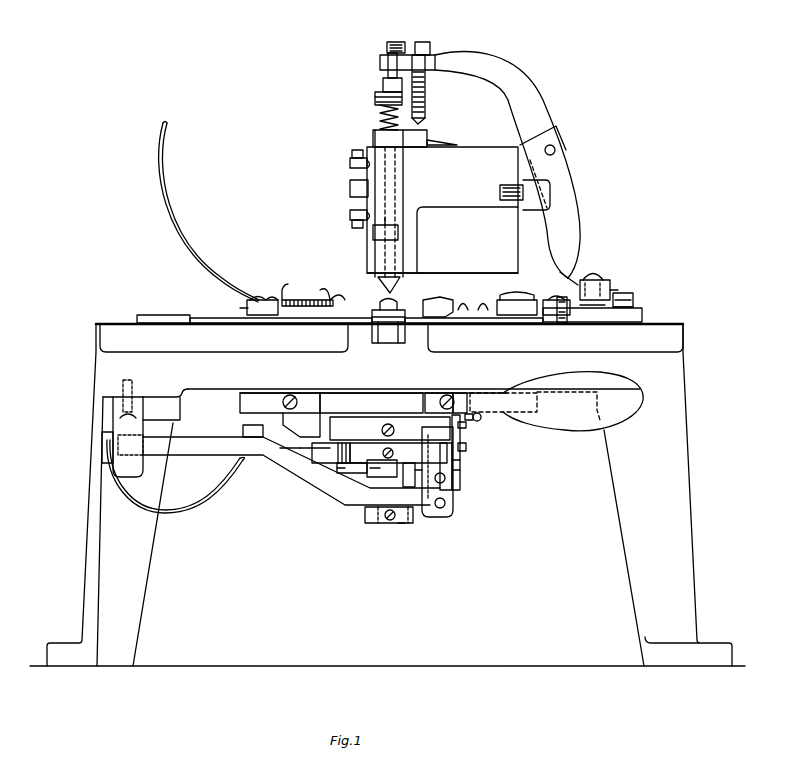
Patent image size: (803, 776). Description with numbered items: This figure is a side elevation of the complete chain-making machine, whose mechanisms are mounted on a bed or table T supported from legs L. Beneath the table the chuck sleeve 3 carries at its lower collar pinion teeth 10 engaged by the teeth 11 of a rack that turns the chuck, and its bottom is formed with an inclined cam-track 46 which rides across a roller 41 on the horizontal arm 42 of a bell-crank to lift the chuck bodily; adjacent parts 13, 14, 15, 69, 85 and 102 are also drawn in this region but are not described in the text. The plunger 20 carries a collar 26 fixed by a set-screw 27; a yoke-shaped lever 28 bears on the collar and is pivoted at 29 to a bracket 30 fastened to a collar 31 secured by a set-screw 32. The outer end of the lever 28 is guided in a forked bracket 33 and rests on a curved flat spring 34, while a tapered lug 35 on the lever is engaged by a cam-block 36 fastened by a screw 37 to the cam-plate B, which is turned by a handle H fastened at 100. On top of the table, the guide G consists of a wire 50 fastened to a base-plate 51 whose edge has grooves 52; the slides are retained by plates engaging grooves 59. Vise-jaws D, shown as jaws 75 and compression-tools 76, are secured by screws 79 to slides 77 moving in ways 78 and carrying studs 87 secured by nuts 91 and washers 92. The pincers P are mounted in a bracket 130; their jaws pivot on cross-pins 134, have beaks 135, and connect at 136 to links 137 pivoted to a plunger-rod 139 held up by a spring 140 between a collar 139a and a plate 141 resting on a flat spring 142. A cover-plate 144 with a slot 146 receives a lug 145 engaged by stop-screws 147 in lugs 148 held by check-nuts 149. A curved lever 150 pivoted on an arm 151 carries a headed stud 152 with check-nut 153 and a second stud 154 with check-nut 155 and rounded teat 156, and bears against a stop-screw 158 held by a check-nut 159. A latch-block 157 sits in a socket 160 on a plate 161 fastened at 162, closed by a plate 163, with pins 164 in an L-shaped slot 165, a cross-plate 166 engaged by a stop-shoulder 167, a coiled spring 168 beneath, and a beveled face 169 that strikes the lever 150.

The sleeve 3 is at (370, 473).
The pinion teeth 10 is at (460, 484).
The teeth 11 is at (340, 462).
The link 13 is at (338, 458).
The pin 14 is at (460, 460).
The pin 15 is at (460, 470).
The plunger 20 is at (380, 477).
The collar 26 is at (405, 524).
The set-screw 27 is at (384, 524).
The yoke-shaped lever 28 is at (275, 462).
The pivot 29 is at (445, 482).
The bracket 30 is at (452, 508).
The collar 31 is at (390, 428).
The set-screw 32 is at (378, 432).
The forked bracket 33 is at (122, 431).
The curved flat spring 34 is at (190, 502).
The tapered lug 35 is at (244, 430).
The cam-block 36 is at (280, 415).
The screw 37 is at (292, 395).
The roller 41 is at (410, 487).
The horizontal arm 42 is at (412, 487).
The inclined cam-track 46 is at (397, 470).
The wire 50 is at (205, 265).
The base-plate 51 is at (296, 286).
The grooves 52 is at (307, 294).
The grooves 59 is at (455, 496).
The block 69 is at (398, 453).
The vise-jaws 75 is at (374, 305).
The compression-tools 76 is at (384, 298).
The slides 77 is at (195, 316).
The ways 78 is at (358, 338).
The screws 79 is at (492, 302).
The clamp 85 is at (260, 299).
The vertical studs 87 is at (548, 298).
The nuts 91 is at (250, 305).
The washers 92 is at (242, 308).
The handle fastening 100 is at (420, 380).
The block 102 is at (320, 450).
The bracket 130 is at (442, 210).
The cross-pins 134 is at (378, 118).
The beaks 135 is at (380, 235).
The pivot 136 is at (424, 273).
The links 137 is at (410, 212).
The plunger-rod 139 is at (375, 95).
The collar 139a is at (374, 102).
The spring 140 is at (376, 100).
The plate 141 is at (372, 140).
The flat spring 142 is at (448, 142).
The cover-plate 144 is at (468, 426).
The lug 145 is at (352, 192).
The slot 146 is at (481, 419).
The stop-screws 147 is at (466, 448).
The lugs 148 is at (350, 165).
The check-nuts 149 is at (352, 154).
The curved lever 150 is at (440, 65).
The arm 151 is at (553, 140).
The headed stud 152 is at (383, 84).
The check-nut 153 is at (386, 47).
The second stud 154 is at (426, 88).
The check-nut 155 is at (425, 52).
The rounded teat 156 is at (421, 120).
The latch-block 157 is at (600, 275).
The stop-screw 158 is at (532, 190).
The check-nut 159 is at (540, 205).
The socket 160 is at (608, 296).
The plate 161 is at (634, 306).
The fastening 162 is at (633, 300).
The plate 163 is at (632, 296).
The pins 164 is at (612, 285).
The L-shaped slot 165 is at (583, 265).
The cross-plate 166 is at (580, 285).
The stop-shoulder 167 is at (567, 270).
The coiled spring 168 is at (562, 325).
The beveled face 169 is at (582, 270).
The cam-plate B is at (371, 402).
The vise-jaws D is at (388, 300).
The guide G is at (287, 292).
The handle H is at (556, 401).
The legs L is at (389, 495).
The pincers P is at (355, 290).
The table T is at (389, 372).